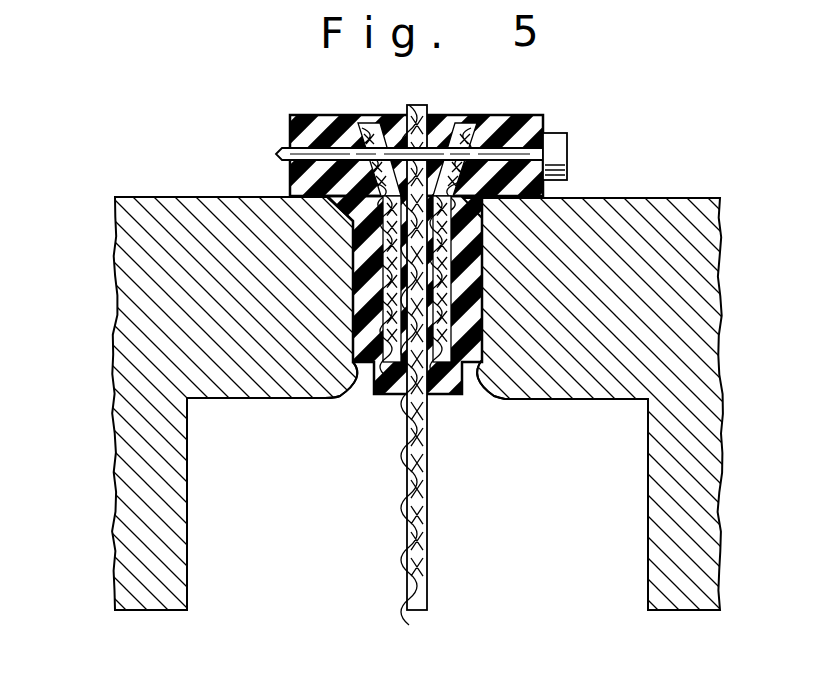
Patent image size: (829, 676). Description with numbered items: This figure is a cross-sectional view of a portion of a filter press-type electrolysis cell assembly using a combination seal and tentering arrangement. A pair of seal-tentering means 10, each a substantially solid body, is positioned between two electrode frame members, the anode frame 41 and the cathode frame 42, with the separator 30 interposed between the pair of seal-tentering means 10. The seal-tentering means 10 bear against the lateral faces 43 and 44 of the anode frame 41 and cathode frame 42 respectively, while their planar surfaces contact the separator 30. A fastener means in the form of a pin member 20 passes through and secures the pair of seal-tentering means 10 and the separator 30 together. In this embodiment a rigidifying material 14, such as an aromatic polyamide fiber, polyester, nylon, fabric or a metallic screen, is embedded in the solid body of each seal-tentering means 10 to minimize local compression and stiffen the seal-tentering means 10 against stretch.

The seal-tentering means 10 is at (272, 113).
The rigidifying material 14 is at (378, 118).
The pin member 20 is at (567, 158).
The separator 30 is at (414, 106).
The anode frame 41 is at (167, 196).
The cathode frame 42 is at (660, 198).
The lateral face 43 is at (357, 375).
The lateral face 44 is at (474, 367).